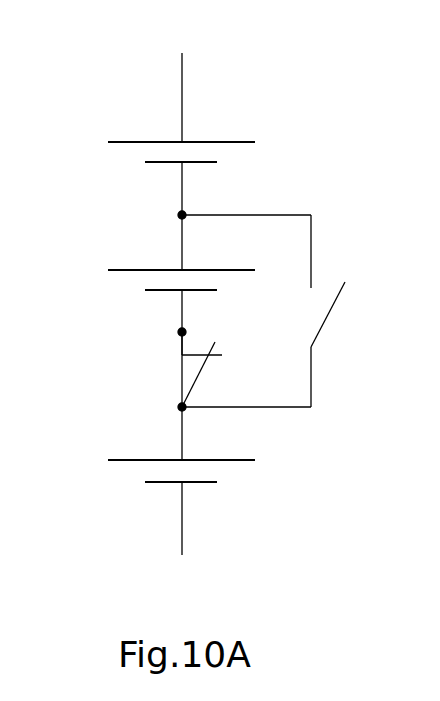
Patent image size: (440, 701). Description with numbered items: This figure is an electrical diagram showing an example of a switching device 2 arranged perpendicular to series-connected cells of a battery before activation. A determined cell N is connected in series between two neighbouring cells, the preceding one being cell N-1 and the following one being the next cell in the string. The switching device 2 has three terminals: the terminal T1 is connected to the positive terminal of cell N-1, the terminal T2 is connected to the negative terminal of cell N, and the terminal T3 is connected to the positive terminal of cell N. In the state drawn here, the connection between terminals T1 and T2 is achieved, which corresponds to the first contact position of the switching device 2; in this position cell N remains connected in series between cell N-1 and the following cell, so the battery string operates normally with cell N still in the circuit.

The cell N is at (94, 284).
The cell N-1 is at (211, 522).
The terminal T3 is at (178, 215).
The terminal T2 is at (178, 332).
The terminal T1 is at (178, 407).
The switching device 2 is at (353, 349).